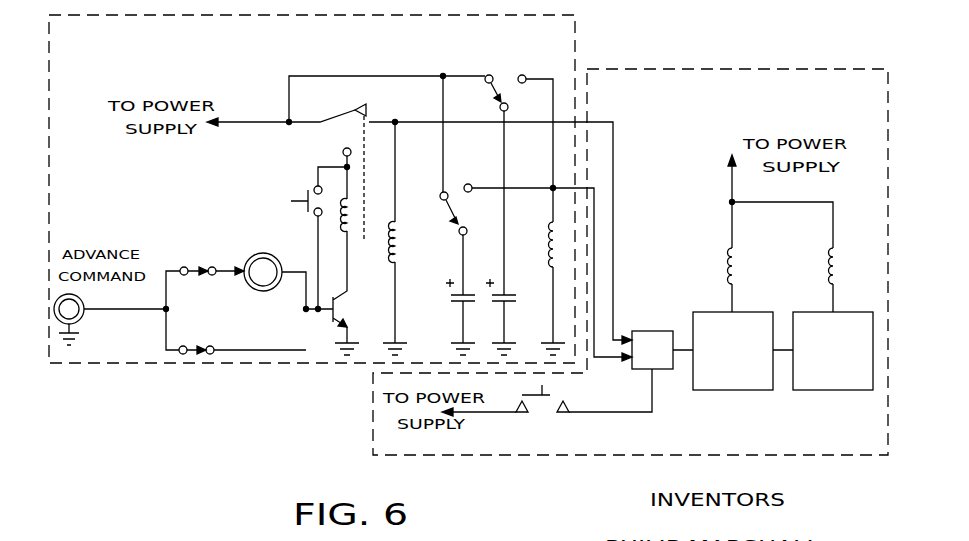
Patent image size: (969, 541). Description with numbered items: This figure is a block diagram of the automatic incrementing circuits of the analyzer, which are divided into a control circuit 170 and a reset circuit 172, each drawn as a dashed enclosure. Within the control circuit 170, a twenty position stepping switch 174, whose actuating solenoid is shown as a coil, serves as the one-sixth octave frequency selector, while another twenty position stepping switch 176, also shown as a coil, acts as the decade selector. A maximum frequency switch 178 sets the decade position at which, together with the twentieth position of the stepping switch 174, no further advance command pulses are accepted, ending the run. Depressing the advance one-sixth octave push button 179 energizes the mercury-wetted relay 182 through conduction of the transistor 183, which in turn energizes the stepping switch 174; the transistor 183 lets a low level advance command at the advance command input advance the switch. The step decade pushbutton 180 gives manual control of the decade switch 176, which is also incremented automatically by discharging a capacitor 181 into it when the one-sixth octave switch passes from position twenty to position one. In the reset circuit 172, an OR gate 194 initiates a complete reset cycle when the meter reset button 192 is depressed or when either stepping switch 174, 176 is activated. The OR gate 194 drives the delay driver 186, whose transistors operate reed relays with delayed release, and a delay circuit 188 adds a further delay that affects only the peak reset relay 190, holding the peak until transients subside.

The control circuit 170 is at (270, 366).
The reset circuit 172 is at (373, 446).
The twenty position stepping switch 174 is at (400, 244).
The twenty position stepping switch 176 is at (549, 253).
The maximum frequency switch 178 is at (260, 253).
The advance 1/6 octave push button 179 is at (305, 196).
The step decade pushbutton 180 is at (503, 95).
The capacitor 181 is at (459, 301).
The mercury-wetted relay 182 is at (352, 228).
The transistor 183 is at (340, 310).
The delay driver 186 is at (728, 390).
The delay circuit 188 is at (828, 390).
The peak reset relay 190 is at (826, 260).
The meter reset button 192 is at (552, 395).
The OR gate 194 is at (640, 330).